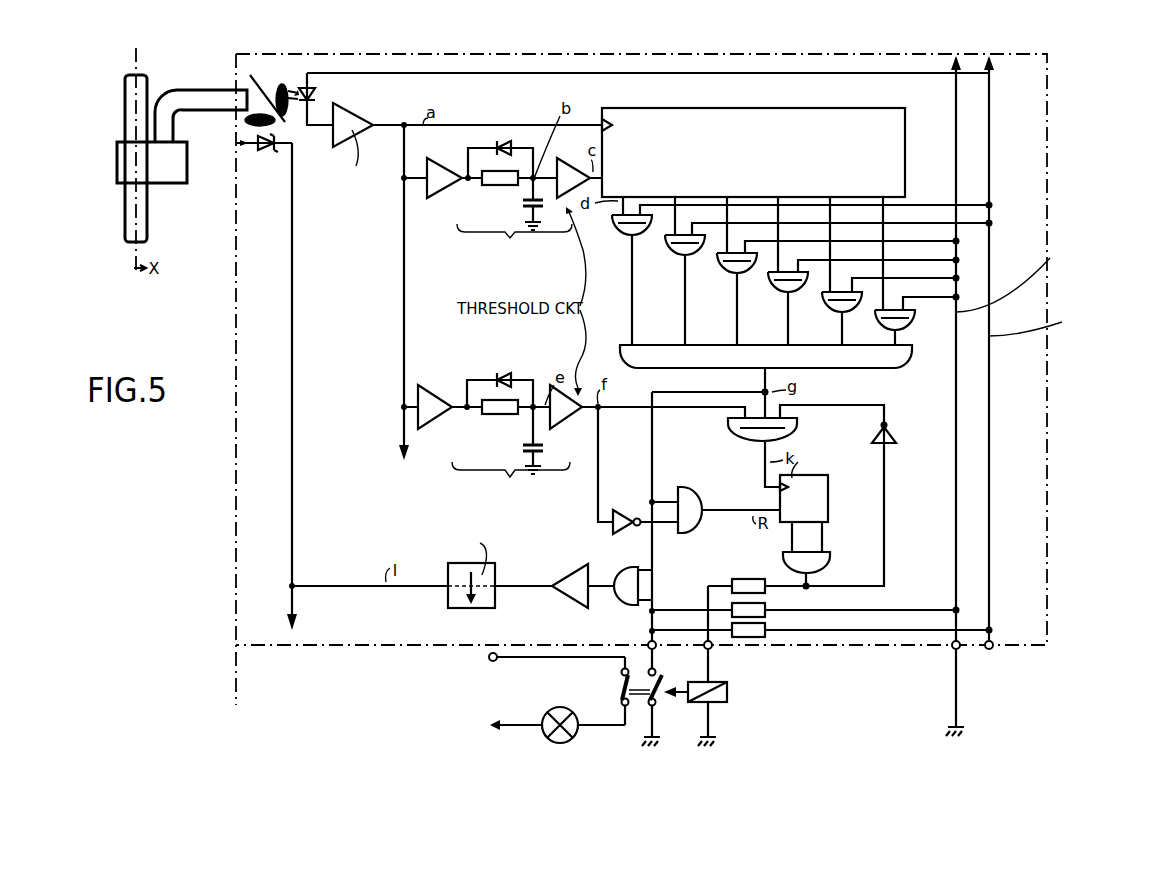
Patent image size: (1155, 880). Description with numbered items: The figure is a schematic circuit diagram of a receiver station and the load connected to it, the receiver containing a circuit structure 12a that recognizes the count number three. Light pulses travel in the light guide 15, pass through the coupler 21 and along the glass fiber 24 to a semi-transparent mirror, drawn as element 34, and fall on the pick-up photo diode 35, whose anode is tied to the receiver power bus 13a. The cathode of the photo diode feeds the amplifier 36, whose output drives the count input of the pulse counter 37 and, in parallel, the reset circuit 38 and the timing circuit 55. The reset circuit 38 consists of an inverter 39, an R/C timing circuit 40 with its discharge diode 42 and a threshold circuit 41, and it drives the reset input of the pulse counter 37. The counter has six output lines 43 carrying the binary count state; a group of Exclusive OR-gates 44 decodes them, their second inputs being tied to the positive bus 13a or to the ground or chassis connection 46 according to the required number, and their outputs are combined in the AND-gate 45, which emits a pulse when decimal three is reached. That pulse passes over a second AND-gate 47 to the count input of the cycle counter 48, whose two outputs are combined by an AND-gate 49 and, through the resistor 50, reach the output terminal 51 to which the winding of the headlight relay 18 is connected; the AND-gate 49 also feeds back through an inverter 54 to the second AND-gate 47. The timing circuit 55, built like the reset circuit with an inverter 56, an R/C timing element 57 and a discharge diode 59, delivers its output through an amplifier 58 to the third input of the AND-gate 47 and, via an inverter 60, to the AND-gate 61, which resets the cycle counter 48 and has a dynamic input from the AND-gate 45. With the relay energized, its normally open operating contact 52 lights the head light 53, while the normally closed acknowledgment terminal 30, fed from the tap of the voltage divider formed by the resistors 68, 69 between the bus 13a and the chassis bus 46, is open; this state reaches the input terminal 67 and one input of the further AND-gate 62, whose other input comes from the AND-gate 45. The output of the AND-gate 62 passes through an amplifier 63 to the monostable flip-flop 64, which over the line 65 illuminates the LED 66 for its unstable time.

The circuit structure 12a is at (1035, 510).
The receiver power bus 13a is at (989, 440).
The light guide 15 is at (128, 94).
The headlight relay 18 is at (728, 700).
The coupler 21 is at (118, 156).
The glass fiber 24 is at (173, 104).
The acknowledgment terminal 30 is at (658, 705).
The light source and optics 34 is at (268, 86).
The pick-up photo diode 35 is at (318, 92).
The amplifier 36 is at (365, 120).
The pulse counter 37 is at (753, 140).
The reset circuit 38 is at (503, 190).
The inverter 39 is at (452, 172).
The R/C timing circuit 40 is at (522, 204).
The threshold circuit 41 is at (568, 170).
The discharge diode 42 is at (500, 142).
The output lines 43 is at (655, 196).
The Exclusive OR-gates 44 is at (632, 240).
The AND-gate 45 is at (622, 362).
The ground or chassis connection 46 is at (956, 387).
The second AND-gate 47 is at (745, 440).
The cycle counter 48 is at (830, 488).
The AND-gate 49 is at (832, 566).
The resistor 50 is at (752, 578).
The output terminal 51 is at (712, 648).
The switch 52 is at (622, 690).
The head light 53 is at (560, 708).
The inverter 54 is at (896, 436).
The timing circuit 55 is at (501, 435).
The inverter 56 is at (440, 395).
The R/C timing element 57 is at (522, 447).
The amplifier 58 is at (565, 420).
The discharge diode 59 is at (500, 375).
The inverter 60 is at (628, 530).
The AND-gate 61 is at (700, 514).
The further AND-gate 62 is at (625, 606).
The amplifier 63 is at (568, 600).
The monostable flip-flop 64 is at (487, 608).
The line 65 is at (295, 508).
The LED 66 is at (268, 152).
The input terminal 67 is at (656, 648).
The resistor 68 is at (768, 600).
The resistor 69 is at (758, 640).